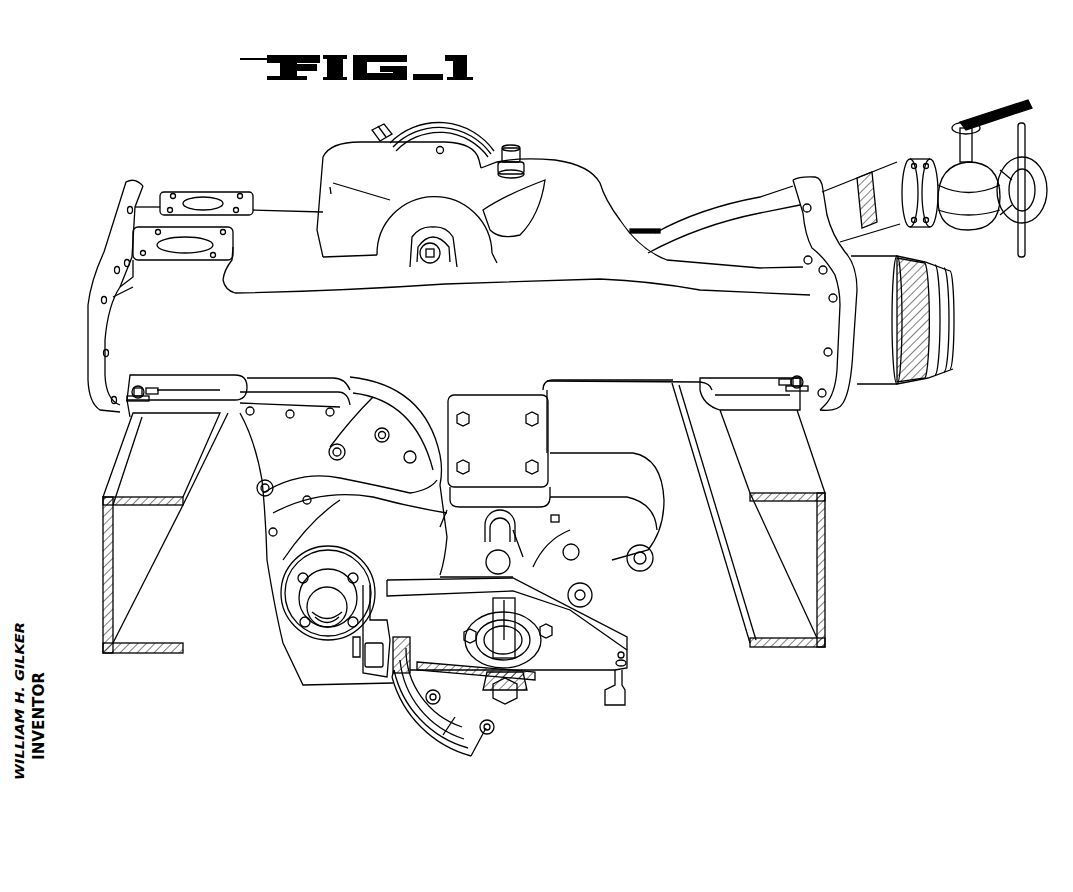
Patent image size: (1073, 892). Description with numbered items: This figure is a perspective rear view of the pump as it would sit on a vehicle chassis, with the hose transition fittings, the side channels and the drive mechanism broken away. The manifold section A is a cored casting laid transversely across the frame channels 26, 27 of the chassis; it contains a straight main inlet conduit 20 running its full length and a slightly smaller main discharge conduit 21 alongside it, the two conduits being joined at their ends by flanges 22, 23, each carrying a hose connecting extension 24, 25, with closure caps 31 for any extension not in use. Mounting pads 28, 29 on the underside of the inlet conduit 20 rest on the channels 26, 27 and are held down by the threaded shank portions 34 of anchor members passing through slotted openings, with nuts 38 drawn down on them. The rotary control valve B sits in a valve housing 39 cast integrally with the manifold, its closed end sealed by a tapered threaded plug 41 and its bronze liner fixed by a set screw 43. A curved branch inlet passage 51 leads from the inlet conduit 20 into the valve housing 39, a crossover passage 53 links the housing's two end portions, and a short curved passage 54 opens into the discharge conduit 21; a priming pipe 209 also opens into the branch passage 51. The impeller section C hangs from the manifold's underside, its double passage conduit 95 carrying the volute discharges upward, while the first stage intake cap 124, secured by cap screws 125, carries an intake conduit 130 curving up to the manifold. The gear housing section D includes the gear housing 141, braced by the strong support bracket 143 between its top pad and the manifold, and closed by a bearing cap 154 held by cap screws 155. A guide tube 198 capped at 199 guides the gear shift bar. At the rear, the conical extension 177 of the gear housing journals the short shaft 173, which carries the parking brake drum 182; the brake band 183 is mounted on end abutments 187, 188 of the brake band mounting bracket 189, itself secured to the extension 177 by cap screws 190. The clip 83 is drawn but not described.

The main inlet conduit 20 is at (562, 336).
The main discharge conduit 21 is at (280, 217).
The flange 22 is at (115, 246).
The flange 23 is at (820, 408).
The hose connecting extension 24 is at (889, 321).
The hose connecting extension 25 is at (883, 175).
The frame channel 26 is at (107, 560).
The frame channel 27 is at (827, 553).
The mounting pad 28 is at (187, 393).
The mounting pad 29 is at (750, 382).
The closure cap 31 is at (1023, 193).
The shank portion 34 is at (142, 386).
The nut 38 is at (138, 400).
The valve housing 39 is at (445, 189).
The tapered threaded plug 41 is at (430, 264).
The set screw 43 is at (436, 151).
The branch inlet passage 51 is at (578, 208).
The crossover passage 53 is at (343, 160).
The curved passage 54 is at (507, 200).
The clip 83 is at (372, 130).
The double passage conduit 95 is at (433, 430).
The first stage intake cap 124 is at (383, 458).
The cap screws 125 is at (345, 450).
The intake conduit 130 is at (343, 476).
The gear housing 141 is at (630, 422).
The gear housing support bracket 143 is at (540, 405).
The cap 154 is at (283, 602).
The cap screws 155 is at (340, 572).
The short shaft 173 is at (503, 700).
The conical extension 177 is at (550, 567).
The parking brake drum 182 is at (443, 732).
The parking brake band 183 is at (397, 697).
The end abutment 187 is at (628, 666).
The end abutment 188 is at (372, 637).
The brake band mounting bracket 189 is at (612, 627).
The cap screws 190 is at (548, 637).
The guide tube 198 is at (490, 536).
The cap 199 is at (488, 560).
The pipe 209 is at (521, 150).
The manifold section A is at (600, 173).
The rotary control valve B is at (455, 158).
The impeller section C is at (285, 451).
The gear housing section D is at (588, 572).